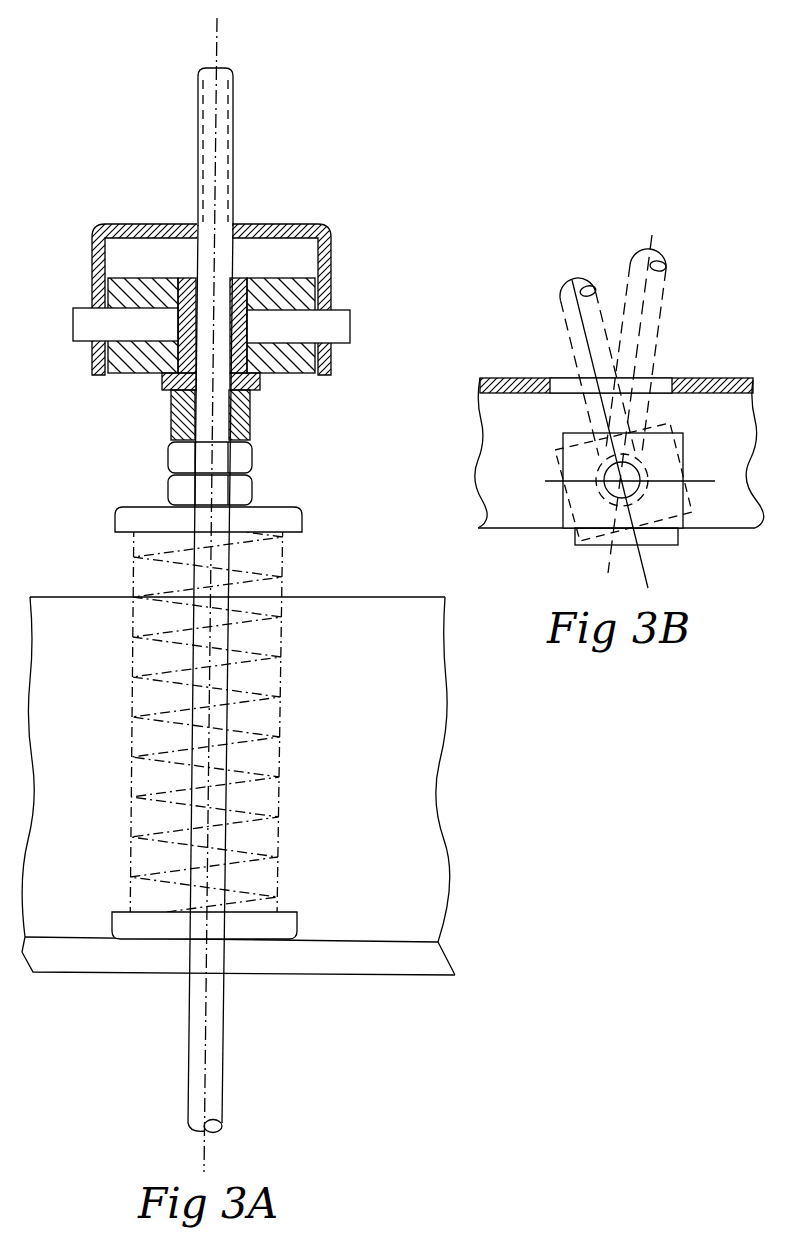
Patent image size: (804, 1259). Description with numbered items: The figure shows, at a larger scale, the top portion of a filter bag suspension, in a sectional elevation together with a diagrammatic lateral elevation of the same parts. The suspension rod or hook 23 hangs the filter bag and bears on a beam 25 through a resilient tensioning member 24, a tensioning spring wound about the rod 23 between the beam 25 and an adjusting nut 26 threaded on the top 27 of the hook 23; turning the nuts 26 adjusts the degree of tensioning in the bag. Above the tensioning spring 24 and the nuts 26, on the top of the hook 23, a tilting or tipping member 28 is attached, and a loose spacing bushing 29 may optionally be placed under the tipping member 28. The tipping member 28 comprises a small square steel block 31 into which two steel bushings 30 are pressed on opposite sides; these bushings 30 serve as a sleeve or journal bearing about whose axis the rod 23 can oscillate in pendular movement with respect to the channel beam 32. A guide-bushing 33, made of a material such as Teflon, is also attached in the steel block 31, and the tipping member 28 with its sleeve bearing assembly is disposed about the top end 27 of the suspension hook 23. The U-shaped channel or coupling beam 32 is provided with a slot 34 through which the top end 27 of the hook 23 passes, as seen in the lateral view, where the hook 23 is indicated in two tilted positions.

In FIG. 3A, the rod 23 is at (213, 1052).
In FIG. 3A, the resilient tensioning member 24 is at (285, 553).
In FIG. 3A, the beam 25 is at (431, 958).
In FIG. 3A, the adjusting nut 26 is at (292, 467).
In FIG. 3A, the top end 27 is at (223, 97).
In FIG. 3A, the tipping member 28 is at (284, 362).
In FIG. 3A, the spacing bushing 29 is at (250, 422).
In FIG. 3A, the steel bushings 30 is at (343, 347).
In FIG. 3A, the steel block 31 is at (297, 302).
In FIG. 3A, the channel beam 32 is at (303, 225).
In FIG. 3A, the guide-bushing 33 is at (260, 382).
In FIG. 3B, the slot 34 is at (562, 378).